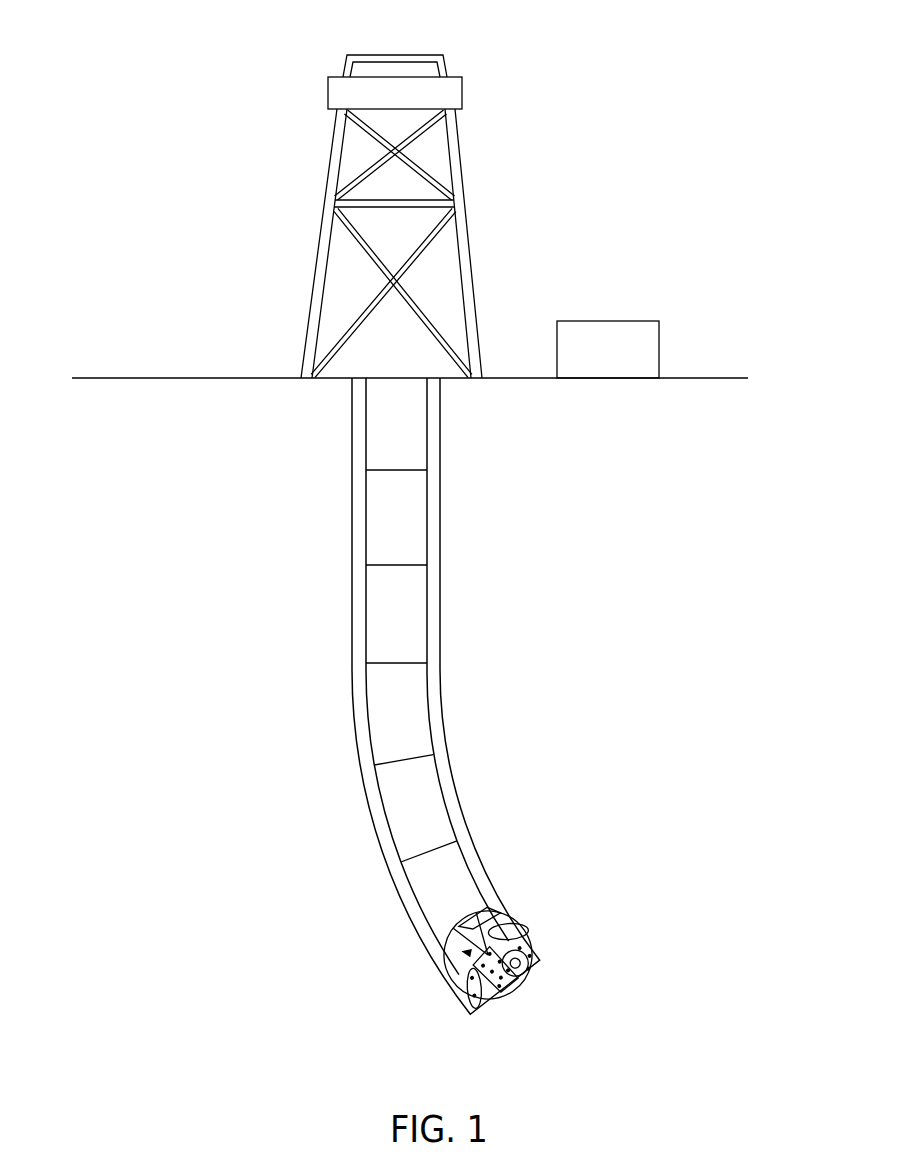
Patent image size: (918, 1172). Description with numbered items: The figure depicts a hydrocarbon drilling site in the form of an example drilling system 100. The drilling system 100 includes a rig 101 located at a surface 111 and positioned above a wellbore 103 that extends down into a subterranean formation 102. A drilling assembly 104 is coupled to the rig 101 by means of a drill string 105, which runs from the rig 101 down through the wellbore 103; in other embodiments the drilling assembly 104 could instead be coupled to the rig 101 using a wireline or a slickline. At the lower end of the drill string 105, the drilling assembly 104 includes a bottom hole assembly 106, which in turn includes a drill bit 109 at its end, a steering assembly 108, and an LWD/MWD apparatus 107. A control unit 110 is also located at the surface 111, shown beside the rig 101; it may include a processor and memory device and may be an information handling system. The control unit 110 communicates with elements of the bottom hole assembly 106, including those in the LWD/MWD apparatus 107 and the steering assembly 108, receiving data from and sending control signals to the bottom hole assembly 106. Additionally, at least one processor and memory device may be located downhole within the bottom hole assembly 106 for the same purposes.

The drilling system 100 is at (610, 137).
The rig 101 is at (462, 90).
The subterranean formation 102 is at (626, 549).
The wellbore 103 is at (348, 520).
The drilling assembly 104 is at (348, 610).
The drill string 105 is at (428, 588).
The bottom hole assembly 106 is at (395, 906).
The LWD/MWD apparatus 107 is at (446, 800).
The steering assembly 108 is at (484, 888).
The drill bit 109 is at (535, 963).
The control unit 110 is at (628, 360).
The surface 111 is at (708, 378).